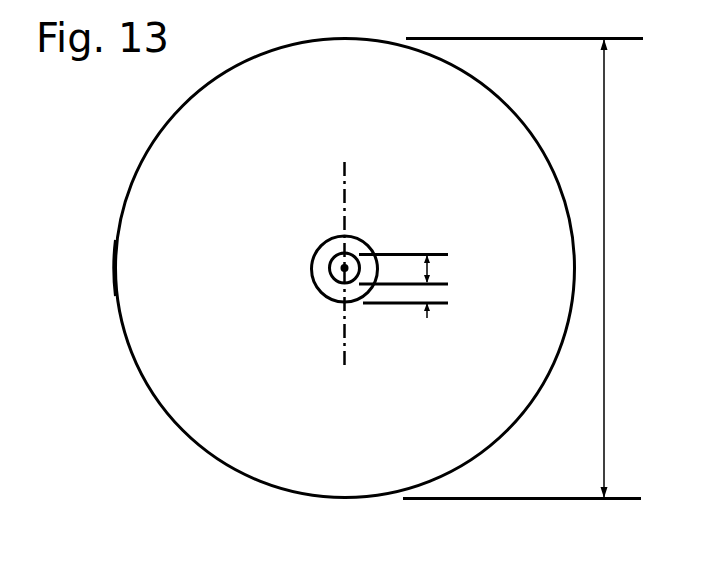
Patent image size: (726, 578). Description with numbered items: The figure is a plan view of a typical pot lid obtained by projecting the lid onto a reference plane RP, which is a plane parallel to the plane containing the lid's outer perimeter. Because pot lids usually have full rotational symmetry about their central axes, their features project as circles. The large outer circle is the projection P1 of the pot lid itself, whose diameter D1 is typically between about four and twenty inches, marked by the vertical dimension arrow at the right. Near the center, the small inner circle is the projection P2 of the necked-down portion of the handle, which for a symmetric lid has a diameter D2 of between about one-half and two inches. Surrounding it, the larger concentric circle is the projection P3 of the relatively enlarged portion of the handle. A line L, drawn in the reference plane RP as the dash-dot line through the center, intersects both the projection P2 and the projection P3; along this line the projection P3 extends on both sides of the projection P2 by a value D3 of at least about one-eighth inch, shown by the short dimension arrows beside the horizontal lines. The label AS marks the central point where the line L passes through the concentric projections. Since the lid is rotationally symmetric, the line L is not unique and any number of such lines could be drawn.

The reference plane RP is at (134, 129).
The projection of the pot lid P1 is at (115, 270).
The projection of the necked-down portion of the handle P2 is at (333, 282).
The projection of the enlarged portion of the handle P3 is at (311, 270).
The axis point / center point AS is at (345, 268).
The line L is at (344, 367).
The diameter of the projection of the pot lid D1 is at (605, 277).
The diameter of the projection of the necked-down portion D2 is at (428, 268).
The extent of the enlarged-portion projection beyond the neck projection D3 is at (428, 318).